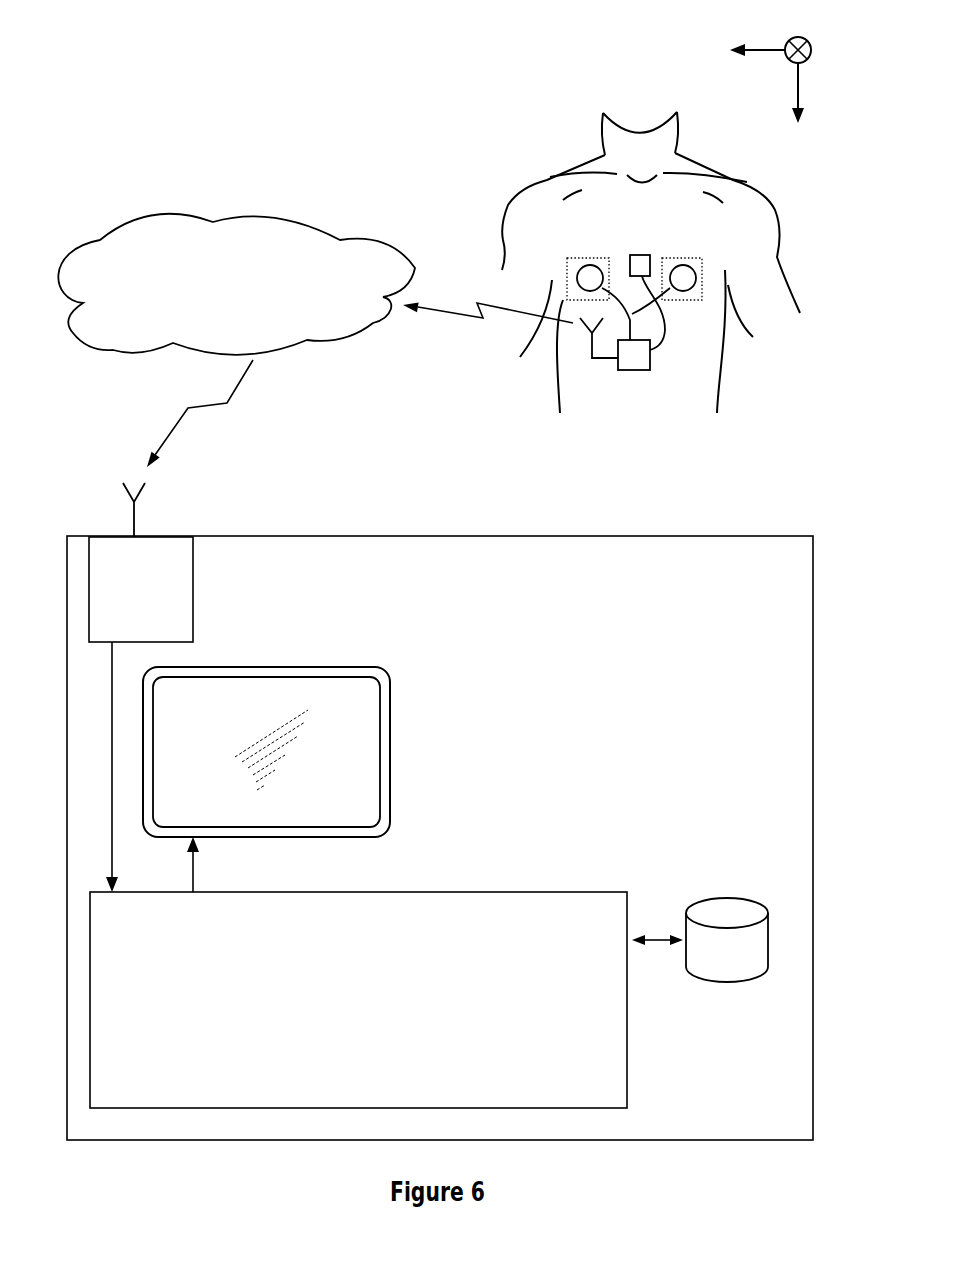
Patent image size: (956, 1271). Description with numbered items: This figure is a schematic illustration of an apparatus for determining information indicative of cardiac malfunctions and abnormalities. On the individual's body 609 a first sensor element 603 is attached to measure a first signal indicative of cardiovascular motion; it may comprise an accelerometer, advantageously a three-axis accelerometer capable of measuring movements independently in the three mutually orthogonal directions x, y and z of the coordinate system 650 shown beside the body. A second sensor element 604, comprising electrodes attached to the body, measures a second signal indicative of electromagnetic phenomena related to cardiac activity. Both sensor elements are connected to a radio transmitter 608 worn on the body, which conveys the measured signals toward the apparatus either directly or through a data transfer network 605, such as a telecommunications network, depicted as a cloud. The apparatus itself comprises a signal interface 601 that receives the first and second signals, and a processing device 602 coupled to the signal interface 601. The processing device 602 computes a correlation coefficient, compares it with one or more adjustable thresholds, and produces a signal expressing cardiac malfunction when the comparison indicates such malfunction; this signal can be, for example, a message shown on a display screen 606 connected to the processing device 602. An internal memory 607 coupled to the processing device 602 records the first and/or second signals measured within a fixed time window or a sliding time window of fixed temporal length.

The signal interface 601 is at (141, 562).
The processing device 602 is at (458, 892).
The first sensor element 603 is at (648, 254).
The second sensor element 604 is at (687, 301).
The data transfer network 605 is at (236, 284).
The display screen 606 is at (220, 665).
The internal memory 607 is at (727, 940).
The radio transmitter 608 is at (632, 371).
The individual's body 609 is at (522, 190).
The coordinate system 650 is at (763, 43).